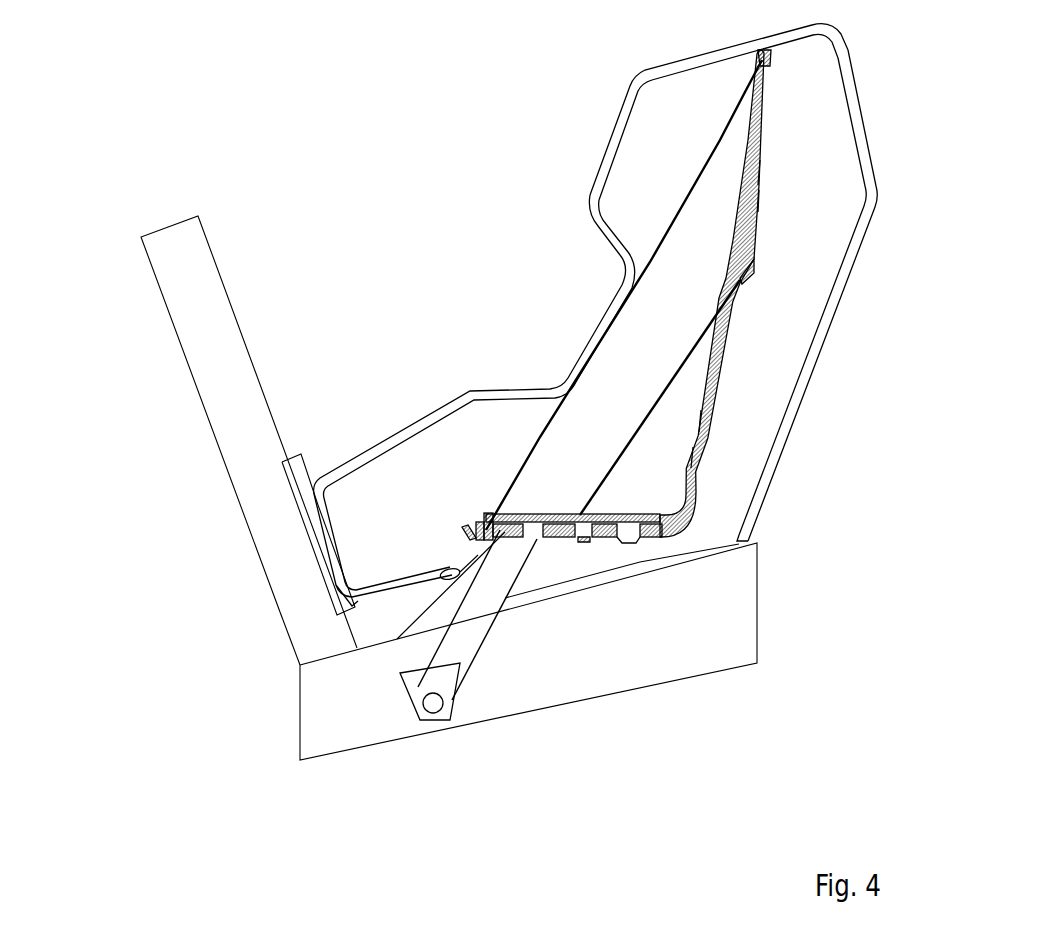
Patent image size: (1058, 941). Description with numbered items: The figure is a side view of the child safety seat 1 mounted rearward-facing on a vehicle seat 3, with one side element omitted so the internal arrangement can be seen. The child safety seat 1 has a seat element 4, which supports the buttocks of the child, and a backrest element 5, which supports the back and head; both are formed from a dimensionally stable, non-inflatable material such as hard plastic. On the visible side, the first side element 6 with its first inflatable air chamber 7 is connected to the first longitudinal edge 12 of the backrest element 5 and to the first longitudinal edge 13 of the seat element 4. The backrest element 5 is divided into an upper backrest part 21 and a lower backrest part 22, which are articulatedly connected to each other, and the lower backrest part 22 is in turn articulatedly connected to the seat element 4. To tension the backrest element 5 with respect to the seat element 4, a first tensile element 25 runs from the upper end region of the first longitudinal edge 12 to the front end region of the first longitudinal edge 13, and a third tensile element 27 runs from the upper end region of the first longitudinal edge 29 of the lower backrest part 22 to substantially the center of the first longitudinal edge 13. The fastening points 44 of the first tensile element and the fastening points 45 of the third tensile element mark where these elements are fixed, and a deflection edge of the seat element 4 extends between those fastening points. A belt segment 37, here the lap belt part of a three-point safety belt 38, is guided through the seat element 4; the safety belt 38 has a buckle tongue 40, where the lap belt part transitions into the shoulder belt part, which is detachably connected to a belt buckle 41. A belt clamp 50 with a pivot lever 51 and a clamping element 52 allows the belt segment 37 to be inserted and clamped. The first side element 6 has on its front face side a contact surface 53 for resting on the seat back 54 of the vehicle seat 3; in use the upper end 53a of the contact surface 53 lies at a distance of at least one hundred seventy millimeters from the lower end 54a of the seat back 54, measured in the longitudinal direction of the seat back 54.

The child safety seat 1 is at (635, 306).
The vehicle seat 3 is at (202, 435).
The seat element 4 is at (528, 650).
The backrest element 5 is at (795, 293).
The first side element 6 is at (616, 306).
The first inflatable air chamber 7 is at (865, 33).
The first longitudinal edge of backrest element 12 is at (843, 215).
The first longitudinal edge of seat element 13 is at (577, 643).
The upper backrest part 21 is at (843, 183).
The lower backrest part 22 is at (778, 451).
The first tensile element 25 is at (591, 295).
The third tensile element 27 is at (574, 363).
The first longitudinal edge of lower backrest part 29 is at (797, 414).
The belt segment 37 is at (564, 547).
The safety belt 38 is at (477, 646).
The buckle tongue 40 is at (390, 708).
The belt buckle 41 is at (382, 723).
The fastening point of first tensile element 44 is at (613, 306).
The fastening point of third tensile element 45 is at (695, 448).
The belt clamp 50 is at (419, 484).
The pivot lever 51 is at (427, 513).
The clamping element 52 is at (483, 486).
The contact surface 53 is at (242, 538).
The upper end of contact surface 53a is at (230, 488).
The seat back 54 is at (231, 432).
The lower end of seat back 54a is at (240, 647).